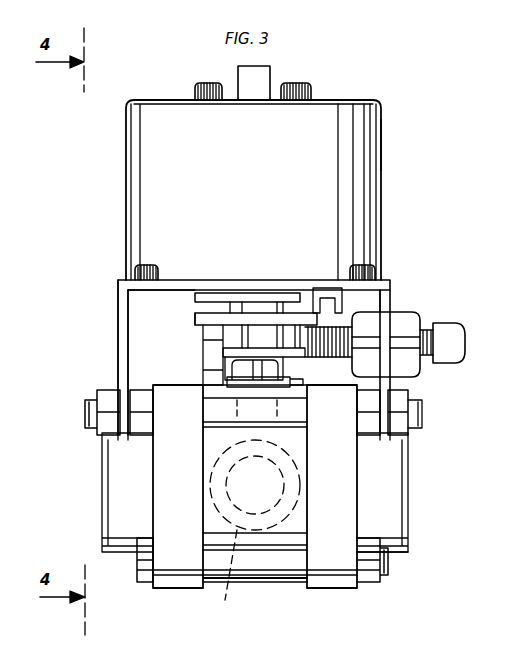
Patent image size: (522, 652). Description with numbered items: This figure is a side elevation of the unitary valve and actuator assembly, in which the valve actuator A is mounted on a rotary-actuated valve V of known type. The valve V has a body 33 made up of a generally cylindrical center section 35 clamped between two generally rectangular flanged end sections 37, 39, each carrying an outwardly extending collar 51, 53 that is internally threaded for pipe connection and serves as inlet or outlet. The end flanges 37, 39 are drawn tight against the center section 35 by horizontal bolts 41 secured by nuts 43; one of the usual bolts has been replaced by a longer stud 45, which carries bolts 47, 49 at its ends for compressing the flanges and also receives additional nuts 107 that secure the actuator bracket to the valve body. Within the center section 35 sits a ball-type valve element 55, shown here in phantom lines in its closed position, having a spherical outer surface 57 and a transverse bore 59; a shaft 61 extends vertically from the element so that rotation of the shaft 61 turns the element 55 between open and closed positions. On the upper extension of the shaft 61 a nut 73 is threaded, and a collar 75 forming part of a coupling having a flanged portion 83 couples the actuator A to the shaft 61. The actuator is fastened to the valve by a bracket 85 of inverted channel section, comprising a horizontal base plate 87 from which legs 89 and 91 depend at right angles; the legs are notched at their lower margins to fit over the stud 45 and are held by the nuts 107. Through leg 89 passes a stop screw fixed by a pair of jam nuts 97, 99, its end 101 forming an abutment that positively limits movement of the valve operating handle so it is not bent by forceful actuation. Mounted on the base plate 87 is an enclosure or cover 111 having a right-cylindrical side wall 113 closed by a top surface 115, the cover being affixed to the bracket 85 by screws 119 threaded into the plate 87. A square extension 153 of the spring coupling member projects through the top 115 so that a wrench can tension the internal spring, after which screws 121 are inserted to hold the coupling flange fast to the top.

The enclosure or cover 111 is at (127, 155).
The side wall 113 is at (363, 200).
The top surface 115 is at (348, 100).
The valve actuator A is at (382, 143).
The screws 121 is at (205, 82).
The extension 153 is at (295, 82).
The screws 119 is at (141, 265).
The bracket 85 is at (392, 282).
The leg 89 is at (393, 297).
The leg 91 is at (118, 304).
The base plate 87 is at (157, 292).
The collar 75 is at (248, 335).
The flanged portion 83 is at (195, 320).
The end of the screw 101 is at (291, 330).
The nut 73 is at (235, 368).
The shaft 61 is at (265, 388).
The jam nut 99 is at (362, 312).
The jam nut 97 is at (466, 343).
The flanged end section 37 is at (178, 590).
The flanged end section 39 is at (345, 590).
The spherical outer surface 57 is at (255, 467).
The body 33 is at (318, 590).
The center section 35 is at (252, 590).
The ball type valve element 55 is at (277, 530).
The bore 59 is at (221, 583).
The collar 53 is at (102, 478).
The collar 51 is at (410, 495).
The rotary-actuated valve V is at (405, 535).
The additional nuts 107 is at (104, 390).
The stud 45 is at (422, 414).
The bolt 47 is at (137, 437).
The bolt 49 is at (371, 437).
The bolts 41 is at (140, 582).
The nuts 43 is at (382, 578).